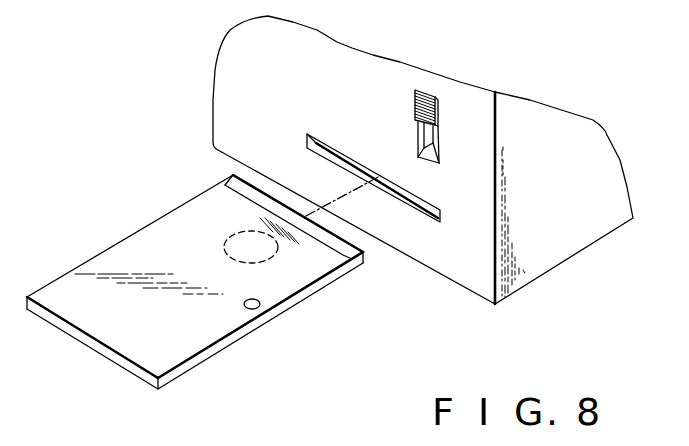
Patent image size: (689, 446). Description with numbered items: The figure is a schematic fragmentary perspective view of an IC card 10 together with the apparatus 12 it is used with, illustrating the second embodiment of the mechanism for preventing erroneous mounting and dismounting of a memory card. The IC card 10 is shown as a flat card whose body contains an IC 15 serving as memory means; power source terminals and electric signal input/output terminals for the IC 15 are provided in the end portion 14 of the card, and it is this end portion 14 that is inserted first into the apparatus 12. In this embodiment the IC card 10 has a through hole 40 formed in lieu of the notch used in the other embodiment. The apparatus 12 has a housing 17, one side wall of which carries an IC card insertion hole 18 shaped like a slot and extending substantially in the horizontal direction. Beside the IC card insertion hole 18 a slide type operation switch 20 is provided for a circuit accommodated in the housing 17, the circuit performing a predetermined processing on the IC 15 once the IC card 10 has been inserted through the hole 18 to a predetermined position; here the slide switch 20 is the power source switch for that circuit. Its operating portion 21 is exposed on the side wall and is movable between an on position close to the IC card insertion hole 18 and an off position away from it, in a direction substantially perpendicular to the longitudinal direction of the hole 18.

The IC card 10 is at (127, 256).
The apparatus 12 is at (510, 91).
The end portion 14 is at (268, 207).
The IC 15 is at (245, 248).
The housing 17 is at (538, 265).
The IC card insertion hole 18 is at (425, 207).
The slide type operation switch 20 is at (444, 108).
The operating portion 21 is at (415, 115).
The through hole 40 is at (260, 302).